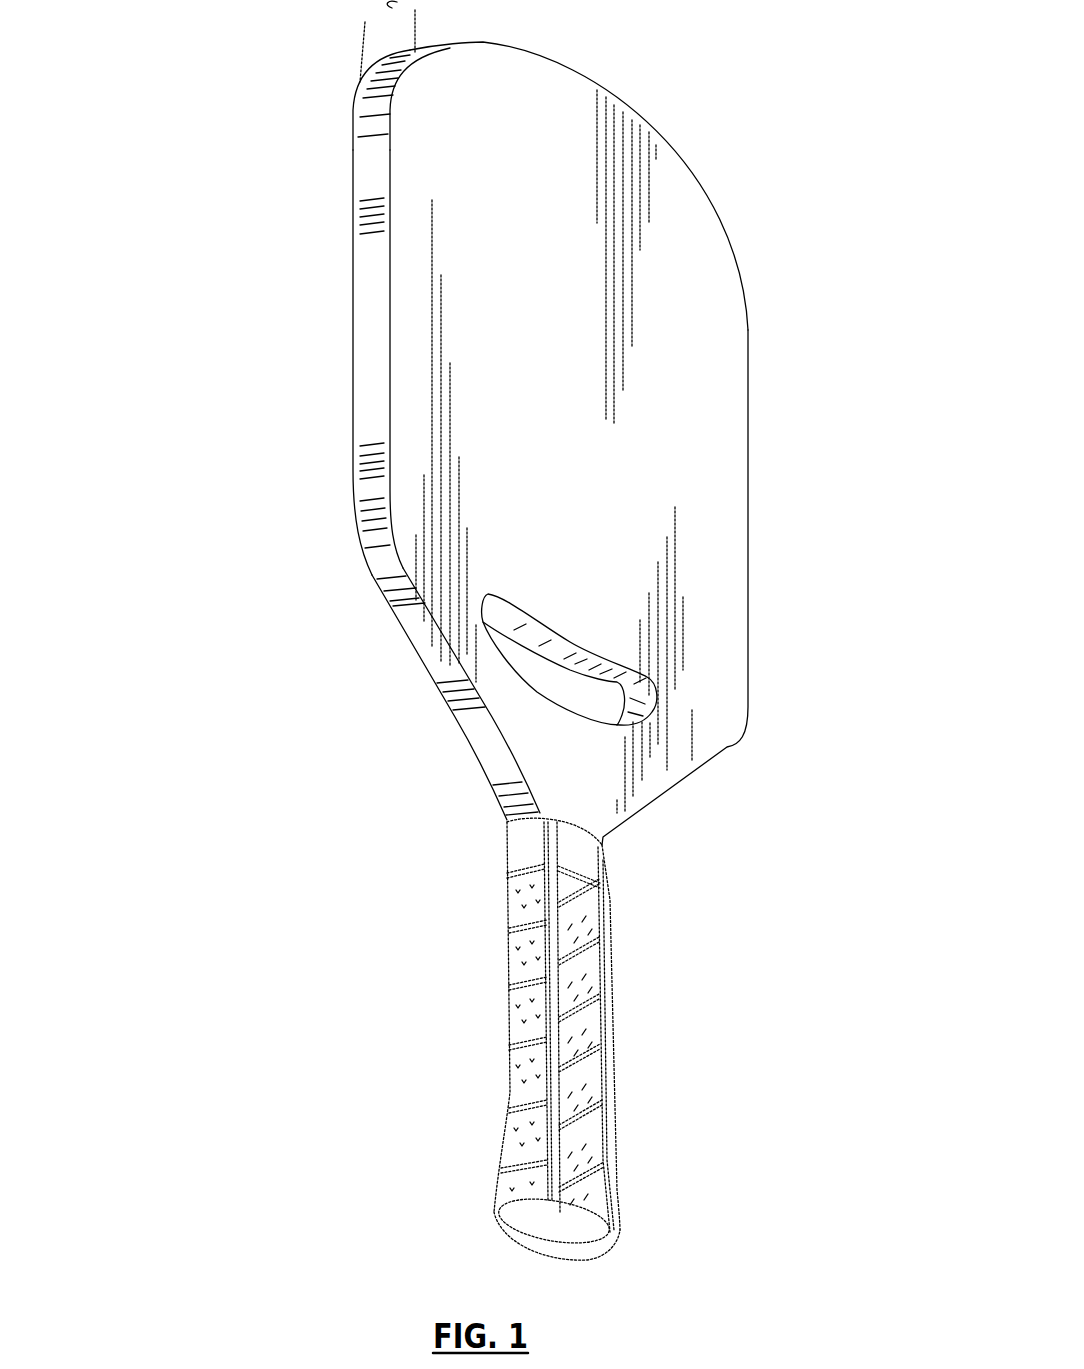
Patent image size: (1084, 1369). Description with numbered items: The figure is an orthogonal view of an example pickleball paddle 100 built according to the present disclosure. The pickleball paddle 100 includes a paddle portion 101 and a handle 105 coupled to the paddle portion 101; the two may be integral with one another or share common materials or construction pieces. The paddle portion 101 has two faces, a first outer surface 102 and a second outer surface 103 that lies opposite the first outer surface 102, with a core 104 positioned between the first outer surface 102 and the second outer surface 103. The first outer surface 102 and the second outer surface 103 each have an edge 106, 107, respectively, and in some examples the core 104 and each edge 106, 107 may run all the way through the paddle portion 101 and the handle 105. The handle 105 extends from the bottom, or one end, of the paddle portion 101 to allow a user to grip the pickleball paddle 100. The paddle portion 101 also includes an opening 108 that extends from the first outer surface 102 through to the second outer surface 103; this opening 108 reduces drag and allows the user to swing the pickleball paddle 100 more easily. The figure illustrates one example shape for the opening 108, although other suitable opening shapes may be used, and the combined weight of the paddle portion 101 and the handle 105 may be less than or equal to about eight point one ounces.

The pickleball paddle 100 is at (502, 630).
The paddle portion 101 is at (600, 423).
The first outer surface 102 is at (556, 418).
The second outer surface 103 is at (328, 362).
The core 104 is at (362, 102).
The handle 105 is at (593, 1039).
The edge 106 is at (718, 587).
The edge 107 is at (426, 684).
The opening 108 is at (656, 695).